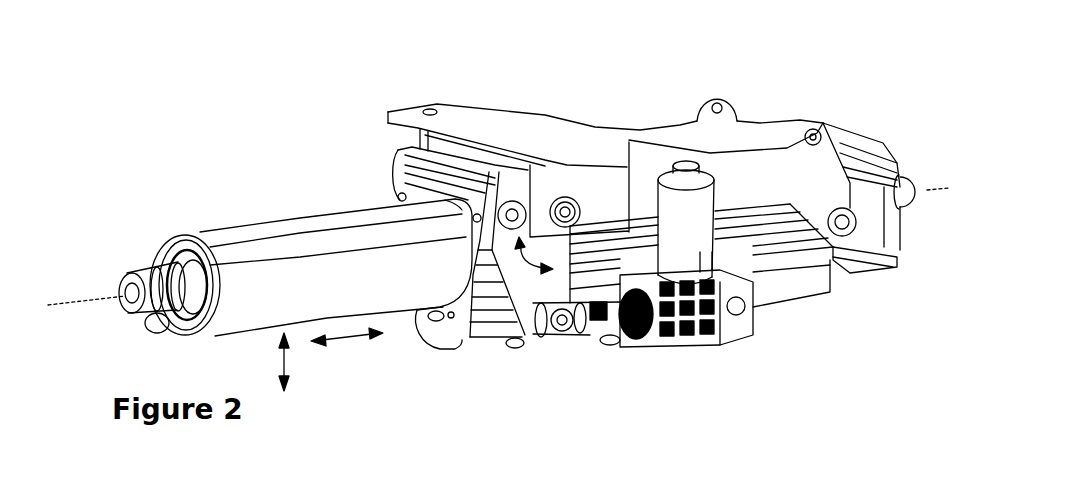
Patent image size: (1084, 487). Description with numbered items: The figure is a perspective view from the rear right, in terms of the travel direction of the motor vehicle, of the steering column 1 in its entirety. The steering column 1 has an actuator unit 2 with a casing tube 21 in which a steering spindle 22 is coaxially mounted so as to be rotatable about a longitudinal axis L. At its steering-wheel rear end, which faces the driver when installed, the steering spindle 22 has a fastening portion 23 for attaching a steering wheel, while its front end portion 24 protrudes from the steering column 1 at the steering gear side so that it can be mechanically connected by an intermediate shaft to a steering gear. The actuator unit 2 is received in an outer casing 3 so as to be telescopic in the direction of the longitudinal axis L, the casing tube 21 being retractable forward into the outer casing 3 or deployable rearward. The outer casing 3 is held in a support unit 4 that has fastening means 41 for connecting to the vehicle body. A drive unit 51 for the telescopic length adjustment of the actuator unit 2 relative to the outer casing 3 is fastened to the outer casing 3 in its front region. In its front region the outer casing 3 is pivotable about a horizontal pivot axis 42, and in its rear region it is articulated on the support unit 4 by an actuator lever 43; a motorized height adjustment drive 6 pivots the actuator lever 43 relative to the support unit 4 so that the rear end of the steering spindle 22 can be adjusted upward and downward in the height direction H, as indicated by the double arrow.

The steering column 1 is at (710, 48).
The actuator unit 2 is at (312, 204).
The casing tube 21 is at (258, 230).
The steering spindle 22 is at (178, 280).
The fastening portion 23 is at (147, 277).
The front end portion 24 is at (901, 197).
The outer casing 3 is at (787, 277).
The support unit 4 is at (673, 130).
The fastening means 41 is at (565, 125).
The horizontal pivot axis 42 is at (845, 250).
The actuator lever 43 is at (525, 273).
The drive unit 51 is at (872, 217).
The motorized height adjustment drive 6 is at (663, 352).
The longitudinal axis L is at (72, 303).
The height direction H is at (280, 362).